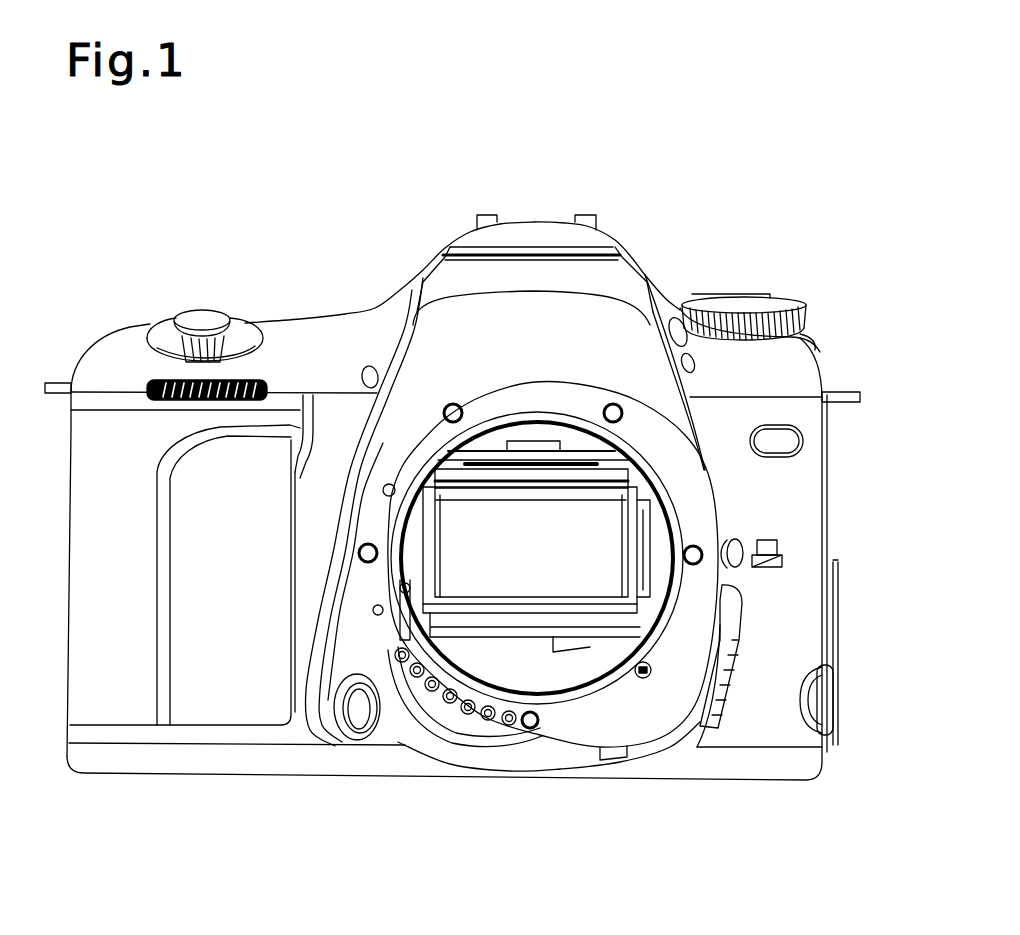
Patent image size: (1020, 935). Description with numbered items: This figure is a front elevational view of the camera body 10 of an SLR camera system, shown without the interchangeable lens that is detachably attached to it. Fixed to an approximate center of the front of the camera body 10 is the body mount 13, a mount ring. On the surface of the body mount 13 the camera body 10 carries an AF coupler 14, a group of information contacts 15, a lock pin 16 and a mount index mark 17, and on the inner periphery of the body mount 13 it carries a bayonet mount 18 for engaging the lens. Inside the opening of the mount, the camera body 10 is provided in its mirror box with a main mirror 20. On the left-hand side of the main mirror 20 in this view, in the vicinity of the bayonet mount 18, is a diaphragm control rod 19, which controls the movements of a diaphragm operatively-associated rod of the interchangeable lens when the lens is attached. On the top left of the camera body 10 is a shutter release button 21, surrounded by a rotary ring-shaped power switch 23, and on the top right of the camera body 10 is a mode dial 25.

The camera body 10 is at (345, 268).
The body mount 13 is at (693, 520).
The AF coupler 14 is at (647, 679).
The group of information contacts 15 is at (427, 720).
The lock pin 16 is at (378, 616).
The mount index mark 17 is at (385, 492).
The bayonet mount 18 is at (585, 652).
The diaphragm control rod 19 is at (400, 586).
The main mirror 20 is at (583, 582).
The shutter release button 21 is at (204, 312).
The power switch 23 is at (163, 330).
The mode dial 25 is at (793, 300).